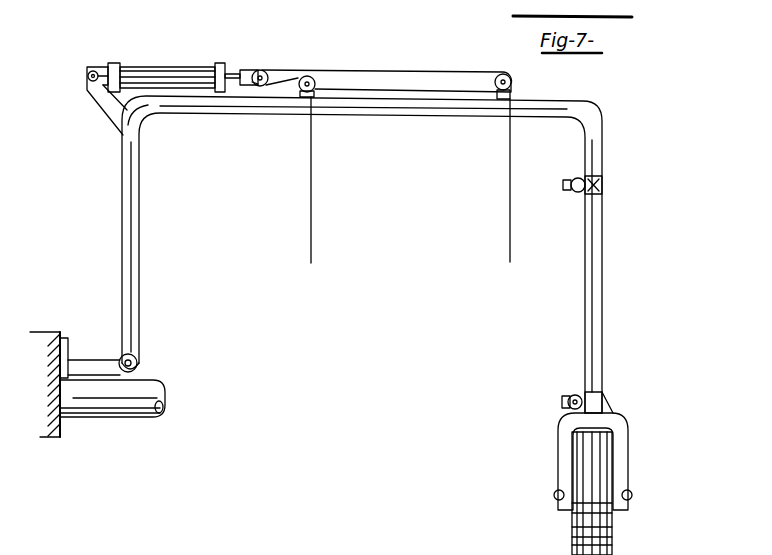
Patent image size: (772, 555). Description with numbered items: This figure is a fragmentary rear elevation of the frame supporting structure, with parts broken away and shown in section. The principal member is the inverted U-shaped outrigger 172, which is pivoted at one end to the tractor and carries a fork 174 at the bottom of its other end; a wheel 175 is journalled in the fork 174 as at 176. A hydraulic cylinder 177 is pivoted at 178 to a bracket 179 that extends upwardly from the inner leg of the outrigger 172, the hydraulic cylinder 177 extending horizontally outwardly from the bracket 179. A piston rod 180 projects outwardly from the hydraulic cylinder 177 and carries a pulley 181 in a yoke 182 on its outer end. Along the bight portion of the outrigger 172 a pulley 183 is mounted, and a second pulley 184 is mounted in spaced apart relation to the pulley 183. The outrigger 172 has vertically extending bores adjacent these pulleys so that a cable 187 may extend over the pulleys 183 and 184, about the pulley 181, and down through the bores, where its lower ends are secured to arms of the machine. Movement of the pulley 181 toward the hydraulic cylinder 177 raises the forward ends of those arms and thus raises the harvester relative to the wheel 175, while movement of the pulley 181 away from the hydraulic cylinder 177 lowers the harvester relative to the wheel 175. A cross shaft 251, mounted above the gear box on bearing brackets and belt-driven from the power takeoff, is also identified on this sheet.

The outrigger 172 is at (460, 105).
The fork 174 is at (620, 440).
The wheel 175 is at (612, 525).
The journal 176 is at (631, 495).
The hydraulic cylinder 177 is at (165, 65).
The pivot 178 is at (90, 70).
The bracket 179 is at (108, 117).
The piston rod 180 is at (236, 72).
The pulley 181 is at (263, 70).
The yoke 182 is at (258, 83).
The pulley 183 is at (317, 87).
The second pulley 184 is at (513, 80).
The cable 187 is at (424, 72).
The cross shaft 251 is at (311, 545).